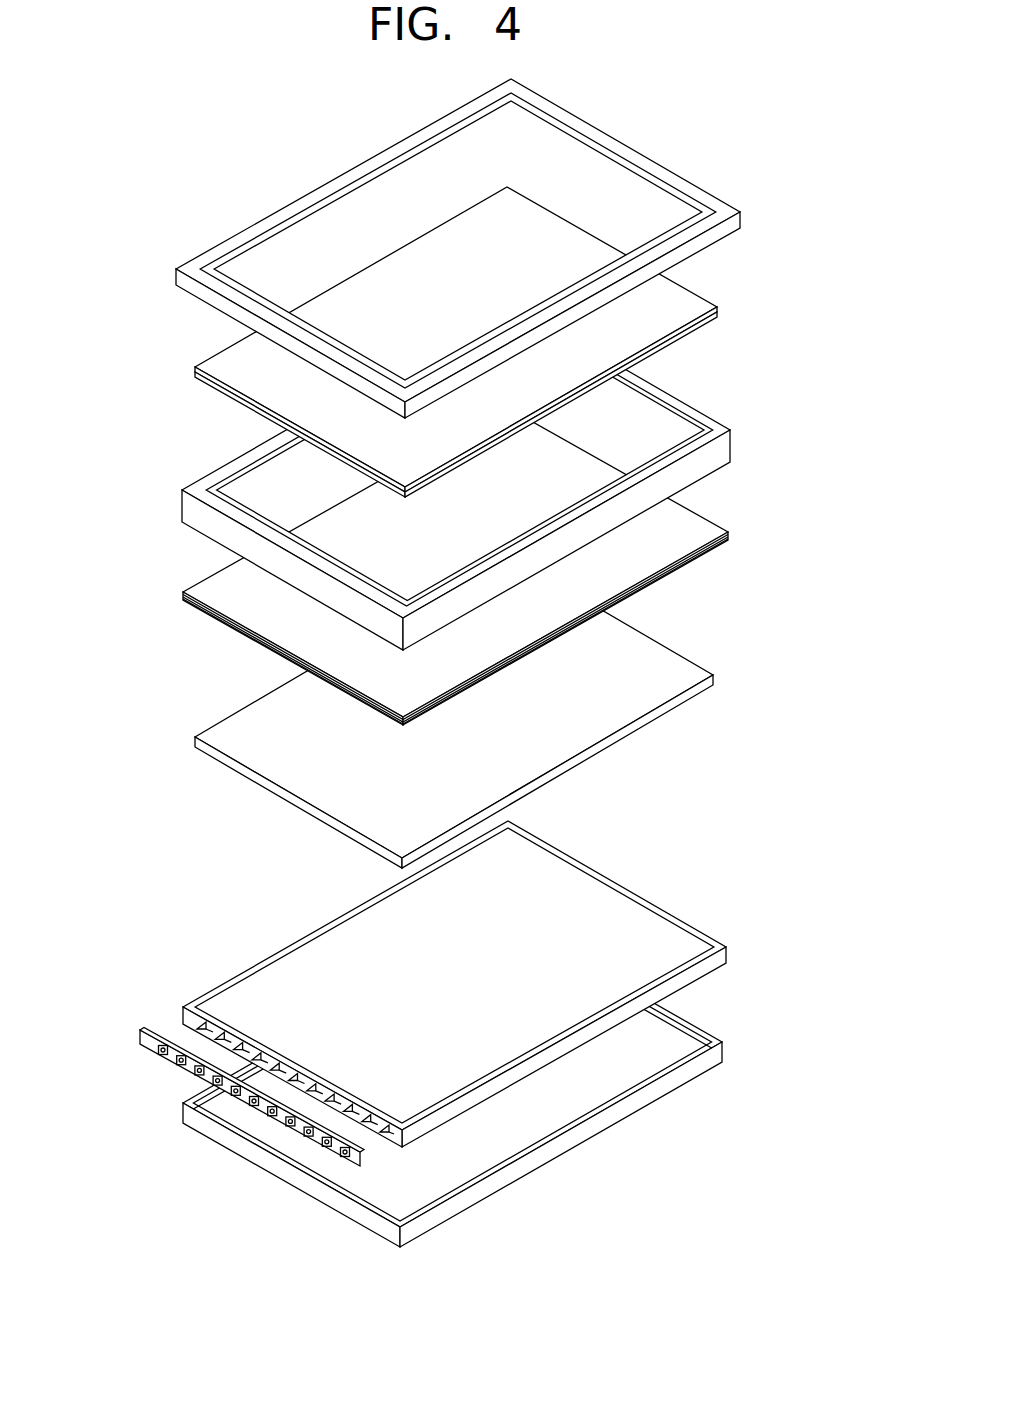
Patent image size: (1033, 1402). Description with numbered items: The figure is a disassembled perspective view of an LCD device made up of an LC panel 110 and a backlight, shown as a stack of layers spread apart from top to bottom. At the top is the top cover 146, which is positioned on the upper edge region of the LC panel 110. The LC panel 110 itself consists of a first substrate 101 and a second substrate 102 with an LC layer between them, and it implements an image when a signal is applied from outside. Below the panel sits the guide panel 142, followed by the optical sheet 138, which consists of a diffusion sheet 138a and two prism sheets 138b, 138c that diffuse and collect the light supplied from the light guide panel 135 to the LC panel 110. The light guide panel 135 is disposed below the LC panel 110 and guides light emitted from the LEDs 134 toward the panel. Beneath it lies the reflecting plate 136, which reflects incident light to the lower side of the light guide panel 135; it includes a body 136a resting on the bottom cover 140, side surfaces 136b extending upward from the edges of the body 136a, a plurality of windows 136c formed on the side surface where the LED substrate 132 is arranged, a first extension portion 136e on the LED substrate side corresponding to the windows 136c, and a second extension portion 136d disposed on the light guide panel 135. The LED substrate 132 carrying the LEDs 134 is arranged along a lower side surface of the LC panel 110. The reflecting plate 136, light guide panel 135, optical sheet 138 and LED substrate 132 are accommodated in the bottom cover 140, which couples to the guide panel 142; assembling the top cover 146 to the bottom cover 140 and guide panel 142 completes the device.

The top cover 146 is at (745, 216).
The LC panel 110 is at (514, 342).
The second substrate 102 is at (717, 307).
The first substrate 101 is at (718, 317).
The guide panel 142 is at (730, 430).
The optical sheet 138 is at (531, 566).
The diffusion sheet 138a is at (730, 534).
The prism sheet 138b is at (730, 533).
The prism sheet 138c is at (730, 532).
The light guide panel 135 is at (688, 673).
The reflecting plate 136 is at (446, 1039).
The body 136a is at (600, 910).
The side surface 136b is at (390, 1142).
The windows 136c is at (197, 1031).
The second extension portion 136d is at (222, 1018).
The first extension portion 136e is at (197, 1016).
The LED substrate 132 is at (140, 1033).
The LEDs 134 is at (162, 1053).
The bottom cover 140 is at (715, 1054).